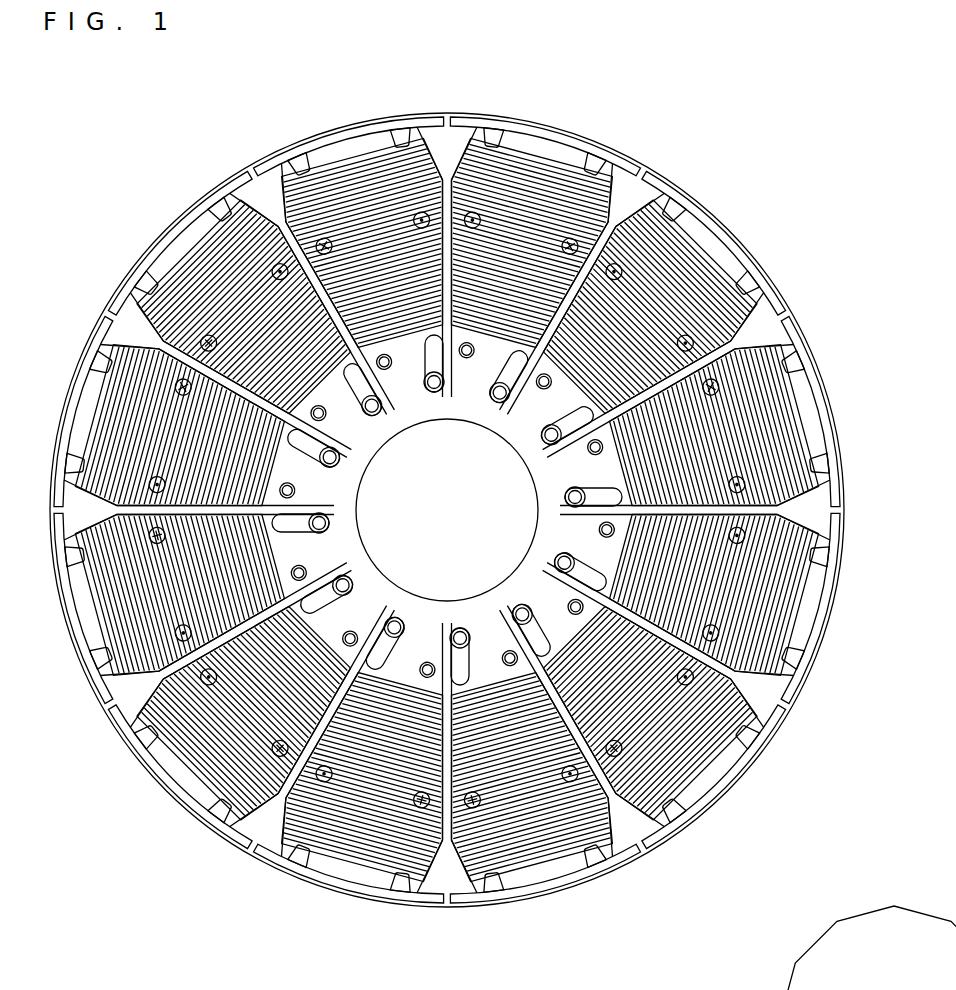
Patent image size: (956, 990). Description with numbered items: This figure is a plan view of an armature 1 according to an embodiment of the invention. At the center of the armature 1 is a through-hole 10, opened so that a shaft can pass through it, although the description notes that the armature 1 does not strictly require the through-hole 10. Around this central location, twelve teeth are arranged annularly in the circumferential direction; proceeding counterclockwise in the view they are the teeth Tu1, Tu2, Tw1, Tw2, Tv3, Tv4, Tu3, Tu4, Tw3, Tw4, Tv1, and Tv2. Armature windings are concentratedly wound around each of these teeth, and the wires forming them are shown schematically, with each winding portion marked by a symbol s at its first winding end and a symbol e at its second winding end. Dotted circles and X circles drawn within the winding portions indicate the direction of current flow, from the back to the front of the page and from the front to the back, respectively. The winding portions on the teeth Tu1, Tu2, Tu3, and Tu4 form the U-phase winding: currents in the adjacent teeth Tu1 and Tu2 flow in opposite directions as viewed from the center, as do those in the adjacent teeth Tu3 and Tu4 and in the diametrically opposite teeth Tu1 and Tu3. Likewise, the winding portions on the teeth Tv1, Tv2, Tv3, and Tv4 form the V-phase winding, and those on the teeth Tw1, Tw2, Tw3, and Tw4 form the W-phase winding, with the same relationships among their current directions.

The armature 1 is at (253, 866).
The through-hole 10 is at (532, 538).
The tooth Tu1 is at (747, 772).
The tooth Tu2 is at (821, 639).
The tooth Tu3 is at (172, 225).
The tooth Tu4 is at (84, 356).
The tooth Tv1 is at (392, 905).
The tooth Tv2 is at (516, 905).
The tooth Tv3 is at (546, 122).
The tooth Tv4 is at (424, 111).
The tooth Tw1 is at (823, 383).
The tooth Tw2 is at (743, 246).
The tooth Tw3 is at (93, 667).
The tooth Tw4 is at (200, 821).